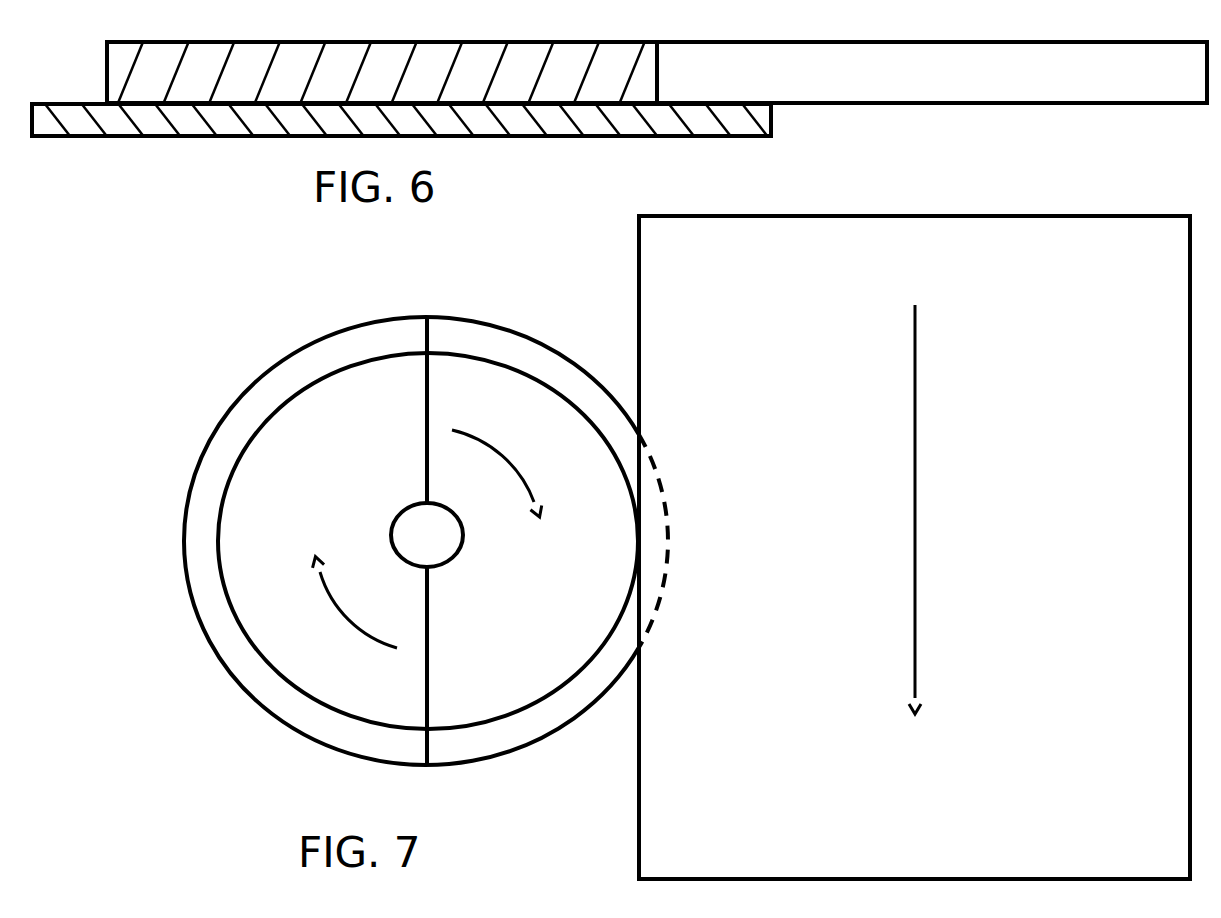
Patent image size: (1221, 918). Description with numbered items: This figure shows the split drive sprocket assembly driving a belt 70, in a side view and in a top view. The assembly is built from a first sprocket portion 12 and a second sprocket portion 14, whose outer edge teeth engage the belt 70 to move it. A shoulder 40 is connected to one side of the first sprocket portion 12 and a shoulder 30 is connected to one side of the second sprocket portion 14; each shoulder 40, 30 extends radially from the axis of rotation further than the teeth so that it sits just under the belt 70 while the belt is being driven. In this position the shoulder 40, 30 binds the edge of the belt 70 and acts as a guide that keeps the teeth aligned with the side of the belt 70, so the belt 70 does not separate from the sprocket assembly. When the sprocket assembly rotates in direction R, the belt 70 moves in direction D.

In FIG. 6, the first sprocket portion 12 is at (165, 80).
In FIG. 7, the first sprocket portion 12 is at (272, 554).
In FIG. 7, the second sprocket portion 14 is at (542, 672).
In FIG. 7, the shoulder 30 is at (493, 775).
In FIG. 6, the shoulder 40 is at (93, 145).
In FIG. 7, the shoulder 40 is at (253, 707).
In FIG. 6, the belt 70 is at (911, 80).
In FIG. 7, the belt 70 is at (674, 349).